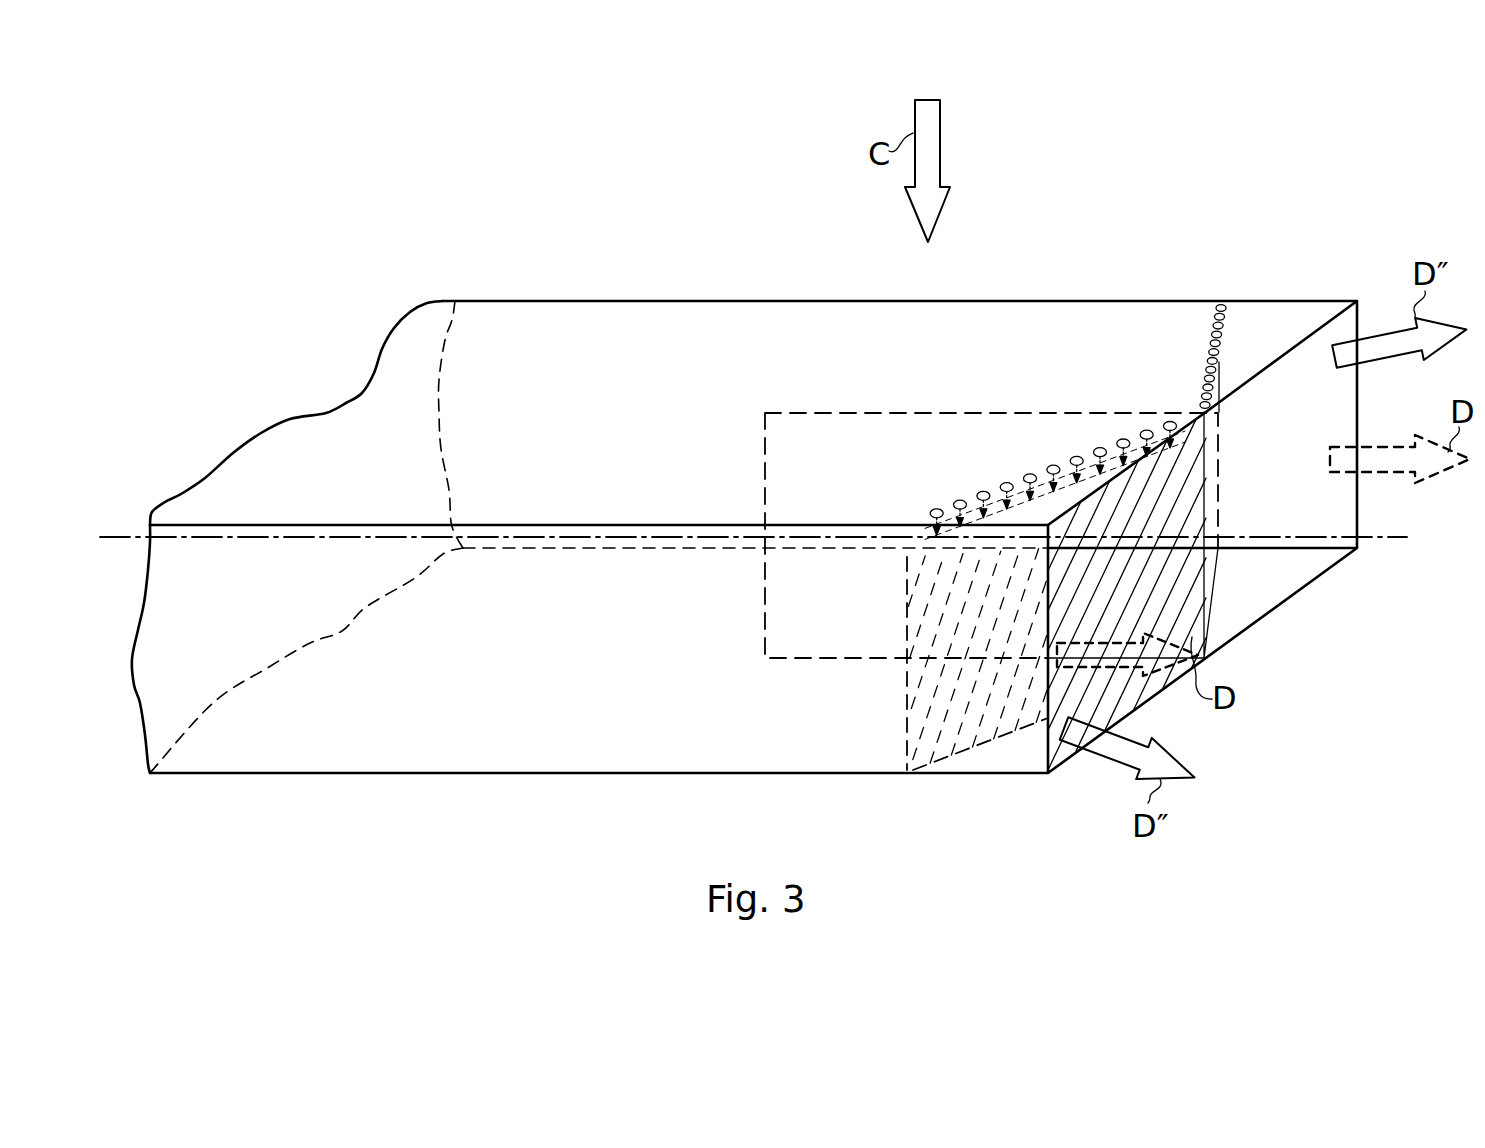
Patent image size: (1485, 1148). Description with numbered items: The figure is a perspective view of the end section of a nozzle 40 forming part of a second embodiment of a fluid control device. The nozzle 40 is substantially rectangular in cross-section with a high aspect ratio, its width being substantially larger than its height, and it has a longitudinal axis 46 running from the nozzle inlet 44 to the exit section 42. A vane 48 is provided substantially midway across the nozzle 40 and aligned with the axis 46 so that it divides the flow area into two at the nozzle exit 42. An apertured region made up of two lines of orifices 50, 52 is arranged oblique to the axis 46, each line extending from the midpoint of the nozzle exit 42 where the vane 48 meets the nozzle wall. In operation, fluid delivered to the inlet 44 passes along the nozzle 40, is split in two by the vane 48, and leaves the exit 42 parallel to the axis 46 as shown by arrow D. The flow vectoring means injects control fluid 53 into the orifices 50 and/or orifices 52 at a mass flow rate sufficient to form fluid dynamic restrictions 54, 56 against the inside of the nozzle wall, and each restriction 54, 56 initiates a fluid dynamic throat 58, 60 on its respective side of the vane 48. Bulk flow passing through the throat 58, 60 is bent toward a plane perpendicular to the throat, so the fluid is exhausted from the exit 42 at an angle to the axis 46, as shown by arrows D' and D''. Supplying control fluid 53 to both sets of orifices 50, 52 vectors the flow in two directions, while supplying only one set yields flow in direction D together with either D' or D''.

The nozzle 40 is at (618, 258).
The exit section 42 is at (1349, 614).
The nozzle inlet 44 is at (207, 457).
The longitudinal axis 46 is at (1384, 538).
The vane 48 is at (1202, 637).
The orifices 50 is at (1222, 305).
The orifices 52 is at (933, 512).
The control fluid 53 is at (1165, 445).
The fluid dynamic restriction 54 is at (1024, 494).
The fluid dynamic restriction 56 is at (1206, 485).
The fluid dynamic throat 58 is at (915, 773).
The fluid dynamic throat 60 is at (1210, 414).